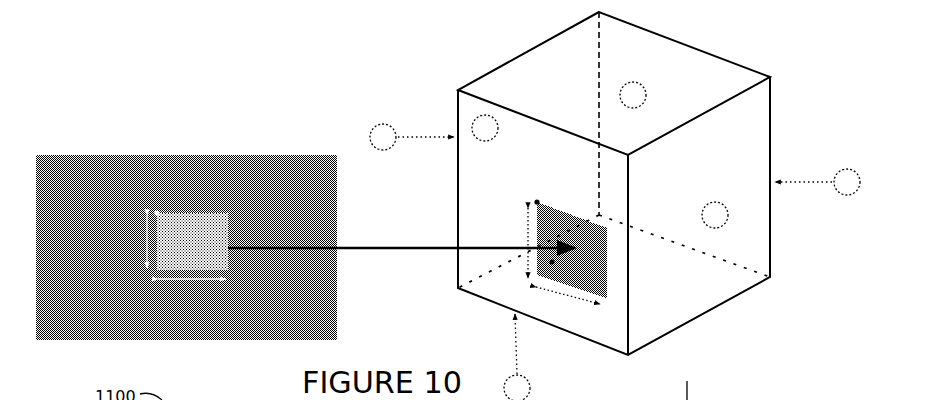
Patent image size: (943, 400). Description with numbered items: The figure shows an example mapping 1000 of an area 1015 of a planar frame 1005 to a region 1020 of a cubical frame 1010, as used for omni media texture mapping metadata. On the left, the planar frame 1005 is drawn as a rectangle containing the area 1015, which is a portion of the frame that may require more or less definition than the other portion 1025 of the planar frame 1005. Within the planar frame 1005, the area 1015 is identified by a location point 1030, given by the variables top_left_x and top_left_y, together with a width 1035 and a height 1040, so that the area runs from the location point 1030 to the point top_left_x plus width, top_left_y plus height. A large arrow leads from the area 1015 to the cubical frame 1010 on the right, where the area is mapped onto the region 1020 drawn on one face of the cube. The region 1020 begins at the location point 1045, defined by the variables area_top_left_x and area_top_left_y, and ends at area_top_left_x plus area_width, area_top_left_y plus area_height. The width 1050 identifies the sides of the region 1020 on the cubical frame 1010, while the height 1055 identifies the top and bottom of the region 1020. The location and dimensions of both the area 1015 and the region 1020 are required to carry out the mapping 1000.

The mapping 1000 is at (366, 88).
The planar frame 1005 is at (79, 155).
The cubical frame 1010 is at (470, 72).
The area 1015 is at (232, 218).
The region 1020 is at (550, 263).
The other portion 1025 is at (260, 176).
The location point 1030 is at (157, 211).
The width 1035 is at (223, 281).
The height 1040 is at (144, 263).
The location point 1045 is at (537, 202).
The width 1050 is at (607, 300).
The height 1055 is at (548, 262).